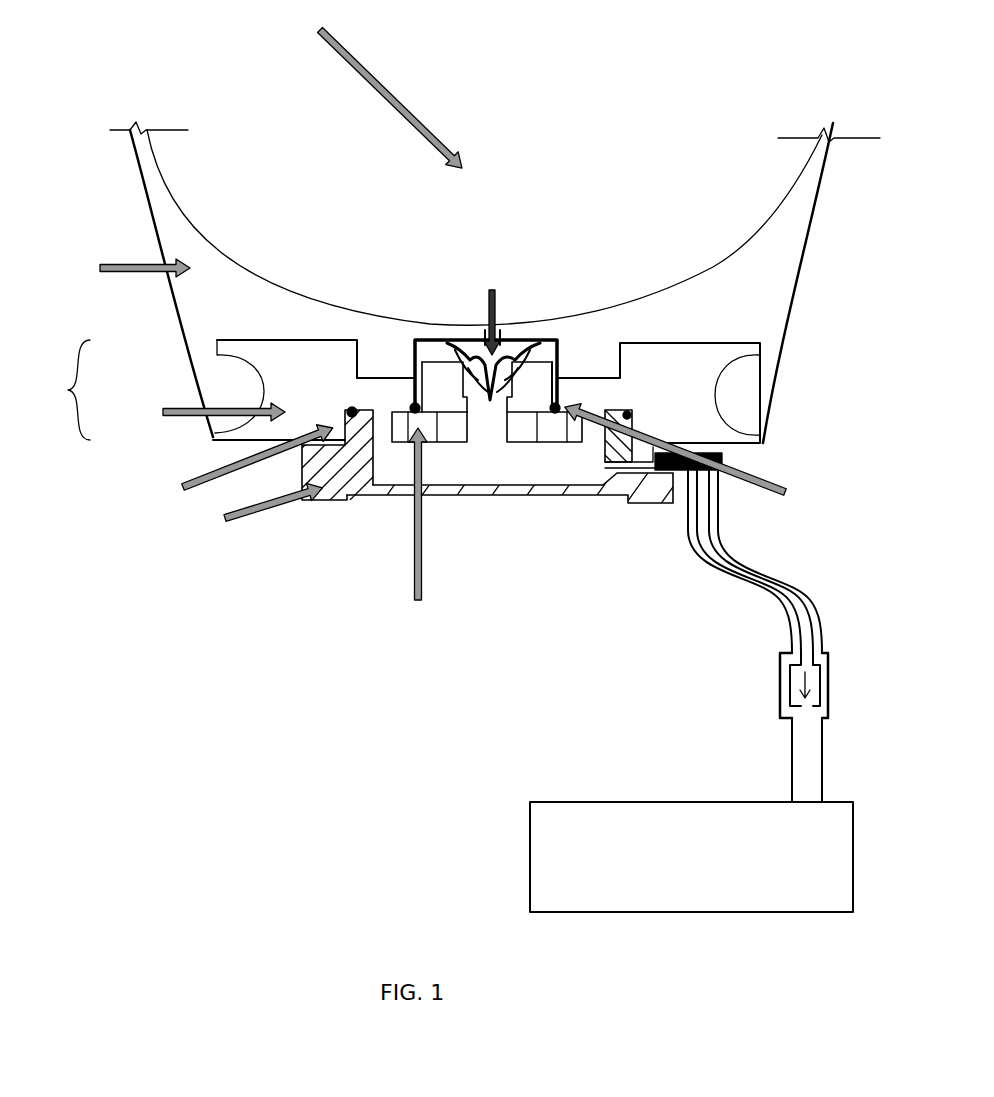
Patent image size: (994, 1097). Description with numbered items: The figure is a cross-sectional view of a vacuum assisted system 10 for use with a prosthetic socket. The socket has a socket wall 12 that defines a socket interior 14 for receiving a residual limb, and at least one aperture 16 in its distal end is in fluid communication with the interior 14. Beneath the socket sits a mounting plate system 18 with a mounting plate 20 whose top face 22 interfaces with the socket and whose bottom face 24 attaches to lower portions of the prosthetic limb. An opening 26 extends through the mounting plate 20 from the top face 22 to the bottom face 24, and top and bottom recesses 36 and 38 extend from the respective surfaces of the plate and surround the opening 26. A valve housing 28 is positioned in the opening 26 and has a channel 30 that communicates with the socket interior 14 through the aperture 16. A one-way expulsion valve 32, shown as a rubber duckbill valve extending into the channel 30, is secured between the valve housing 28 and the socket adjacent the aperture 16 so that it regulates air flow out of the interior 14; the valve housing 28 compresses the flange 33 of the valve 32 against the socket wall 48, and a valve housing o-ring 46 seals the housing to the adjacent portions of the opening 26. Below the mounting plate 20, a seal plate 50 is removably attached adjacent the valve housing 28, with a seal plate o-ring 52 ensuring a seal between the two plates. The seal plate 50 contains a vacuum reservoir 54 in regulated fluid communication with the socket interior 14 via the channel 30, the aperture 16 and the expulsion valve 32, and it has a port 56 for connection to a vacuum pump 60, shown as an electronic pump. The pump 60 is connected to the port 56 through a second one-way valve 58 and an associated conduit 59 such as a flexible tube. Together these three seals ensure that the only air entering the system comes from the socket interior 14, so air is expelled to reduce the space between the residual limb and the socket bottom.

The vacuum assisted system 10 is at (232, 675).
The socket wall 12 is at (122, 276).
The socket interior 14 is at (375, 91).
The aperture 16 is at (499, 305).
The mounting plate system 18 is at (59, 390).
The mounting plate 20 is at (206, 414).
The top face 22 is at (292, 338).
The bottom face 24 is at (230, 448).
The opening 26 is at (562, 388).
The valve housing 28 is at (411, 525).
The channel 30 is at (500, 425).
The one-way expulsion valve 32 is at (520, 342).
The flange 33 is at (447, 340).
The top recess 36 is at (383, 378).
The bottom recess 38 is at (382, 414).
The valve housing o-ring 46 is at (694, 453).
The socket wall 48 is at (548, 340).
The seal plate 50 is at (256, 512).
The seal plate o-ring 52 is at (244, 466).
The vacuum reservoir 54 is at (548, 470).
The port 56 is at (643, 480).
The second one-way valve 58 is at (717, 727).
The conduit 59 is at (805, 588).
The vacuum pump 60 is at (608, 857).